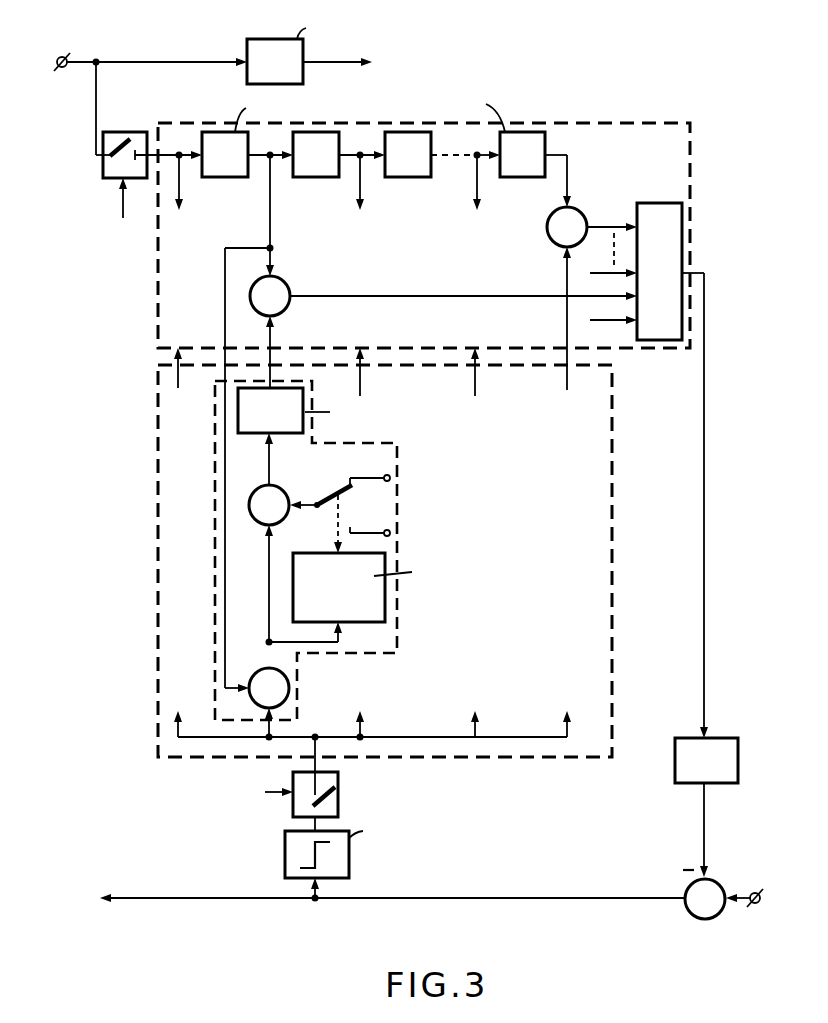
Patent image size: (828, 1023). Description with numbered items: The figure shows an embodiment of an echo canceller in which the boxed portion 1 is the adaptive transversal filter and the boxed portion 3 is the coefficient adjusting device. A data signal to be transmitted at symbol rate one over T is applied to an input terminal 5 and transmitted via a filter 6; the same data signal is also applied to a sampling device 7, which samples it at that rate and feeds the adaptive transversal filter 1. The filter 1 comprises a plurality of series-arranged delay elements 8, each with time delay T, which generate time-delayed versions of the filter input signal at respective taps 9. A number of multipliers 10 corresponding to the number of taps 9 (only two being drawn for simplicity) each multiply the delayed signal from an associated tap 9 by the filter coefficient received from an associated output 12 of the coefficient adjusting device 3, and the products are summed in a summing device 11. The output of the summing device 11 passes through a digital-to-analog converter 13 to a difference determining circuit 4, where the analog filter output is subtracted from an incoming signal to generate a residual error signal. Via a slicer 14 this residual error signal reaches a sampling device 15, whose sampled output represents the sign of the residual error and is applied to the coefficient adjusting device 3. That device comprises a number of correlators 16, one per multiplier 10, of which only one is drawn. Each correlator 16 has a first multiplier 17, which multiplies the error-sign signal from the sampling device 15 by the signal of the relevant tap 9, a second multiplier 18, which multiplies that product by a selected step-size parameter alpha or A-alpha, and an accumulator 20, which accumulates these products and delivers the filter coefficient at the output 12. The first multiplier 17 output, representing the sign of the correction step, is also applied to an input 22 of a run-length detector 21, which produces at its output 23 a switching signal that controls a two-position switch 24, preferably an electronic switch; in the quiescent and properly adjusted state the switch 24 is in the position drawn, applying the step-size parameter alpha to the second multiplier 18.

The adaptive transversal filter 1 is at (655, 167).
The coefficient adjusting device 3 is at (594, 423).
The difference determining circuit 4 is at (708, 918).
The input terminal 5 is at (150, 90).
The filter 6 is at (284, 39).
The sampling device 7 is at (134, 132).
The delay element 8 is at (223, 132).
The tap 9 is at (182, 180).
The multiplier 10 is at (286, 282).
The summing device 11 is at (663, 343).
The output 12 is at (179, 384).
The digital-to-analog converter 13 is at (686, 738).
The slicer 14 is at (351, 857).
The sampling device 15 is at (340, 796).
The correlator 16 is at (398, 638).
The first multiplier 17 is at (262, 671).
The second multiplier 18 is at (264, 489).
The accumulator 20 is at (287, 435).
The run-length detector 21 is at (372, 586).
The input 22 is at (342, 641).
The output 23 is at (333, 548).
The two-position switch 24 is at (334, 495).